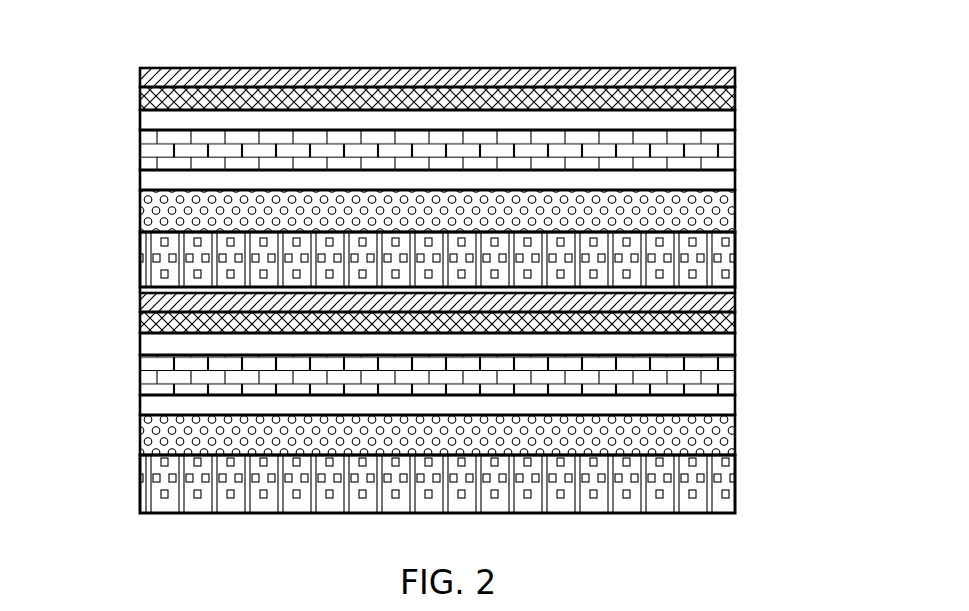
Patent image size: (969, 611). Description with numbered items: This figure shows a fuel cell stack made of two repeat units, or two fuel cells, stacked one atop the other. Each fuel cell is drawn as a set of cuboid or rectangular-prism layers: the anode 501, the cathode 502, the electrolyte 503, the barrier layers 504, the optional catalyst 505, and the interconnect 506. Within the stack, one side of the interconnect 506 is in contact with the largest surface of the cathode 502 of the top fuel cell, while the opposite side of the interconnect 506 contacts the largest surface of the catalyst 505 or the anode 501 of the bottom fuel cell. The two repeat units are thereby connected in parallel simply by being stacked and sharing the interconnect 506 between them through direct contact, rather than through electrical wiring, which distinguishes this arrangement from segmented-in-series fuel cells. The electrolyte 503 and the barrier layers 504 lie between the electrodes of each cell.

The anode 501 is at (737, 93).
The cathode 502 is at (140, 210).
The electrolyte 503 is at (713, 148).
The barrier layers 504 is at (148, 120).
The catalyst 505 is at (140, 68).
The interconnect 506 is at (720, 262).